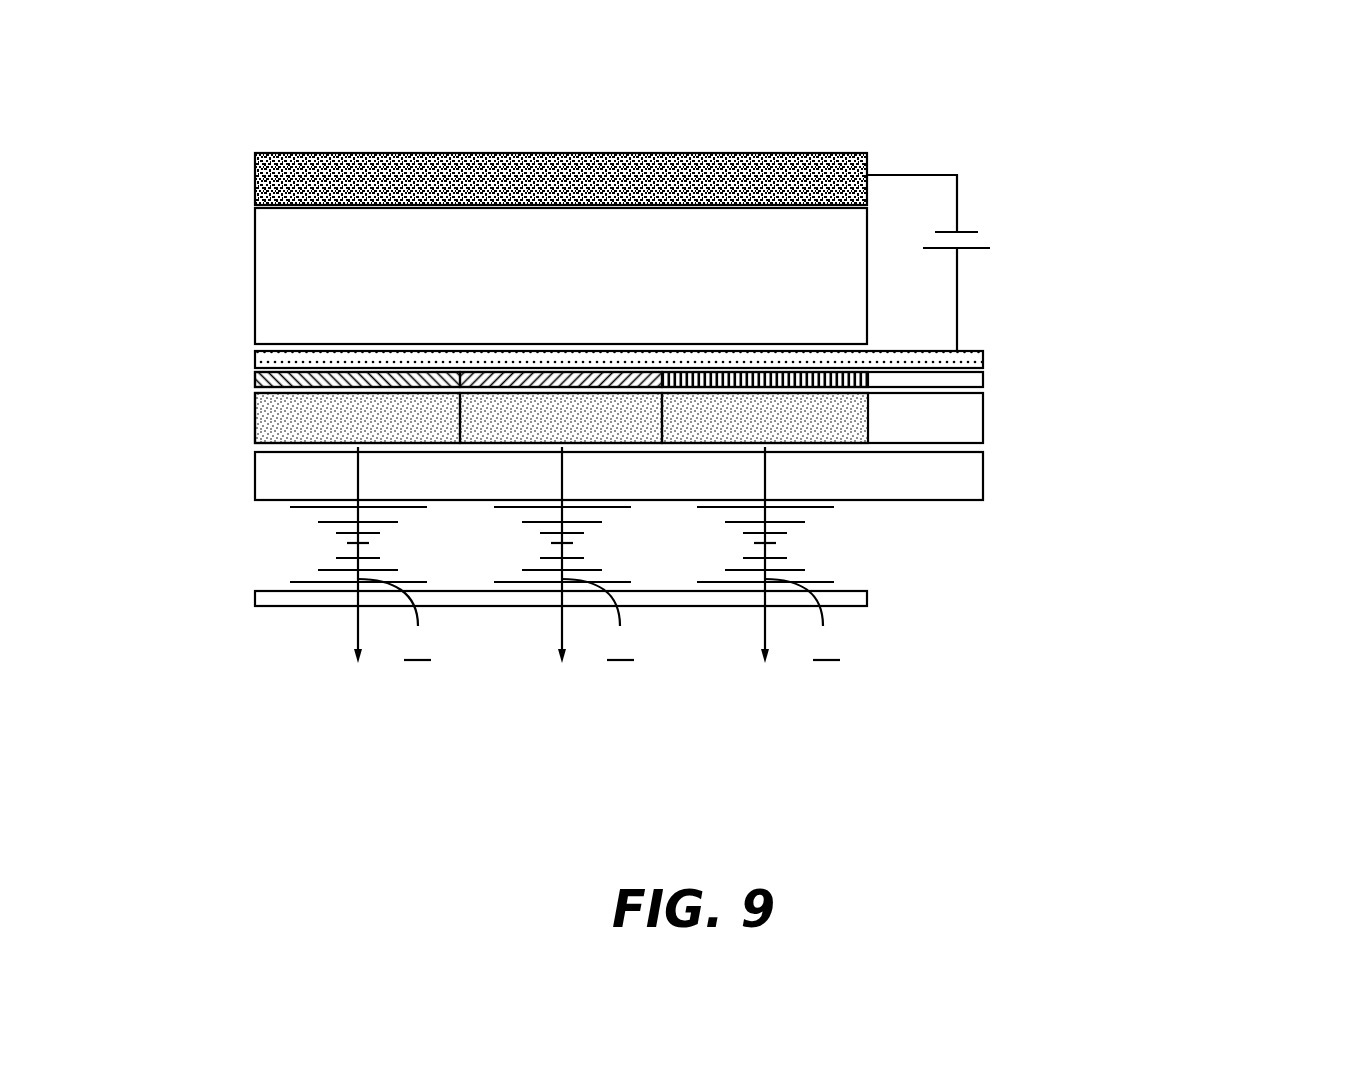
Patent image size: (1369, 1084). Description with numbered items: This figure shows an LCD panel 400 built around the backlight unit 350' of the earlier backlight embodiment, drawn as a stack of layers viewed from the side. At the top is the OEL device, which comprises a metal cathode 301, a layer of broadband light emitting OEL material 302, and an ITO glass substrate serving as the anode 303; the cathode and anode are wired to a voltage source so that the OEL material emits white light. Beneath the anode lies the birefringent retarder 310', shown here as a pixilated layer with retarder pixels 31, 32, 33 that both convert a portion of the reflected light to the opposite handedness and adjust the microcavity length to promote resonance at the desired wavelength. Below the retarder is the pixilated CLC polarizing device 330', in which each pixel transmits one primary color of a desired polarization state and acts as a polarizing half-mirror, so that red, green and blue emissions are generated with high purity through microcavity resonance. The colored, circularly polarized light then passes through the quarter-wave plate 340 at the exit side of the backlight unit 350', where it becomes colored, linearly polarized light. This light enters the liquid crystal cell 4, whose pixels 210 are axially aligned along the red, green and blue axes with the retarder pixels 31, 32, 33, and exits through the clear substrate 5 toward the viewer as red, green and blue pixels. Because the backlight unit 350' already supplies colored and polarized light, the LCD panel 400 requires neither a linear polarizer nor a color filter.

The LCD panel 400 is at (466, 764).
The backlight unit 350' is at (683, 230).
The cathode 301 is at (349, 170).
The OEL material 302 is at (848, 304).
The anode 303 is at (984, 356).
The birefringent retarder 310' is at (751, 347).
The retarder pixel 31 is at (255, 380).
The retarder pixel 32 is at (520, 377).
The retarder pixel 33 is at (728, 377).
The CLC polarizing device 330' is at (785, 418).
The quarter-wave plate 340 is at (984, 477).
The liquid crystal cell 4 is at (616, 544).
The pixels 210 is at (320, 544).
The clear substrate 5 is at (255, 598).